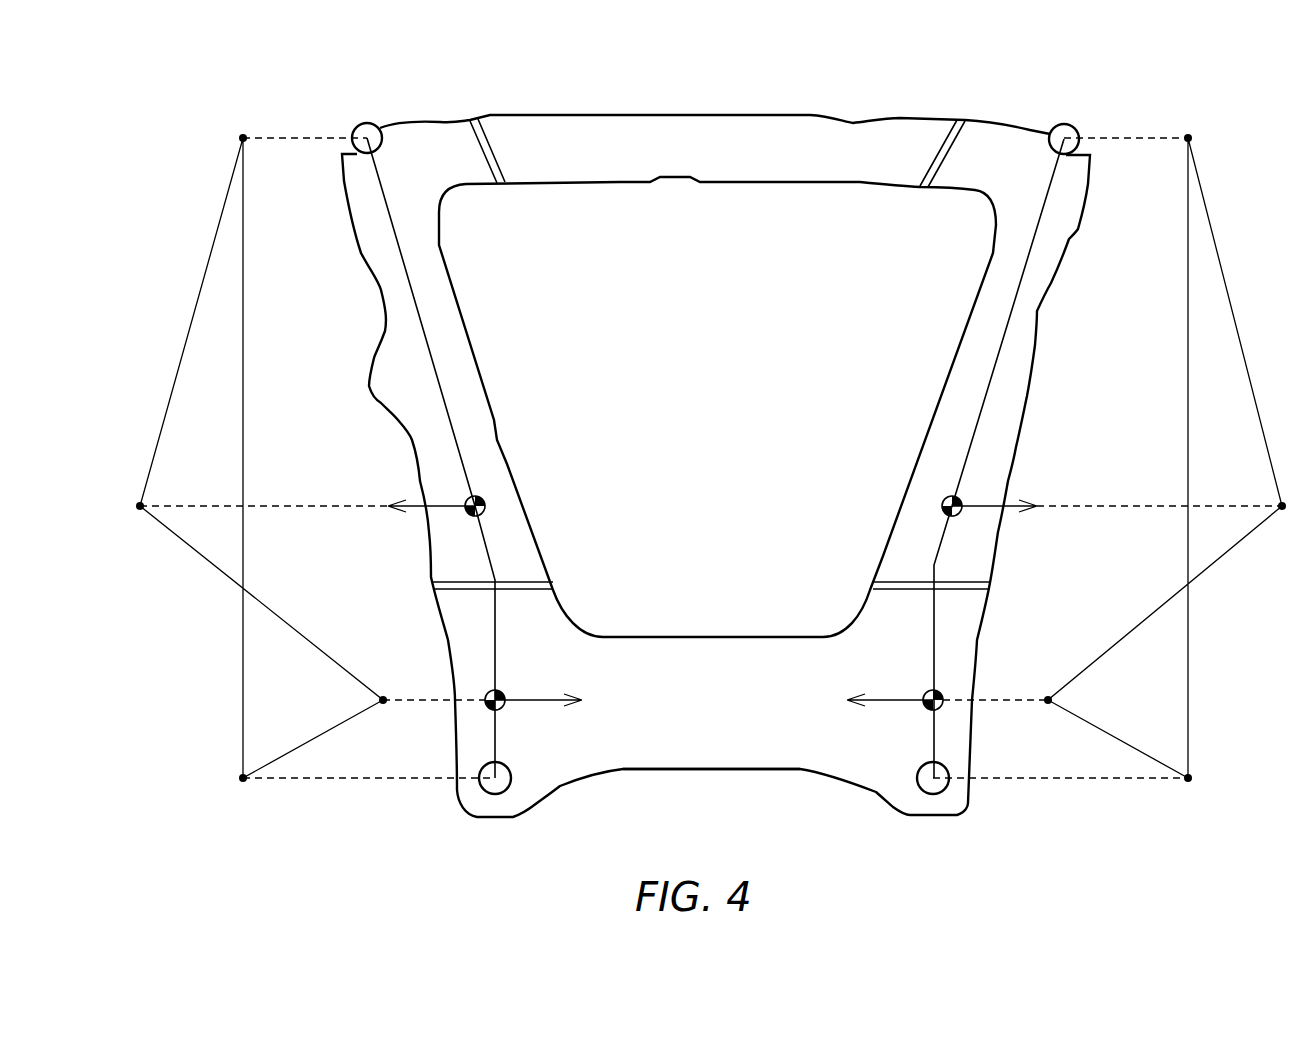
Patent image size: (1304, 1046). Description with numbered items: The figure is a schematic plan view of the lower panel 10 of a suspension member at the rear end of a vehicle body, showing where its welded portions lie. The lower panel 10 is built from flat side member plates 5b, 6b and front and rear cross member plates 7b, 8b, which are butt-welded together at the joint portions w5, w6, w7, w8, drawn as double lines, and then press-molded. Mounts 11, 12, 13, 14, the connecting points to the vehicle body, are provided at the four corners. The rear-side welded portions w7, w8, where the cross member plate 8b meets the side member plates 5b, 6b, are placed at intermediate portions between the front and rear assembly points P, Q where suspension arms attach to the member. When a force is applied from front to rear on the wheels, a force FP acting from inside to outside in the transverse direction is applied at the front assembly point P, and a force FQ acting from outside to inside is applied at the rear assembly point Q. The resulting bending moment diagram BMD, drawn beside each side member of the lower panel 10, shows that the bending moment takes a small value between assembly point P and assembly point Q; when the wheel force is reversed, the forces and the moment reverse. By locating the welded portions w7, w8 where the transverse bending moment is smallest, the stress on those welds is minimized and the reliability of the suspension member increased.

The lower panel 10 is at (703, 110).
The mount 11 is at (1070, 123).
The mount 12 is at (376, 123).
The mount 13 is at (943, 792).
The mount 14 is at (488, 795).
The side member plate 5b is at (973, 348).
The side member plate 6b is at (457, 373).
The cross member plate 7b is at (735, 160).
The cross member plate 8b is at (732, 725).
The welded portion w5 is at (933, 157).
The welded portion w6 is at (493, 152).
The welded portion w7 is at (912, 578).
The welded portion w8 is at (523, 580).
The assembly point P is at (463, 503).
The assembly point Q is at (487, 695).
The force FP is at (437, 493).
The force FQ is at (543, 703).
The bending moment diagram BMD is at (711, 441).